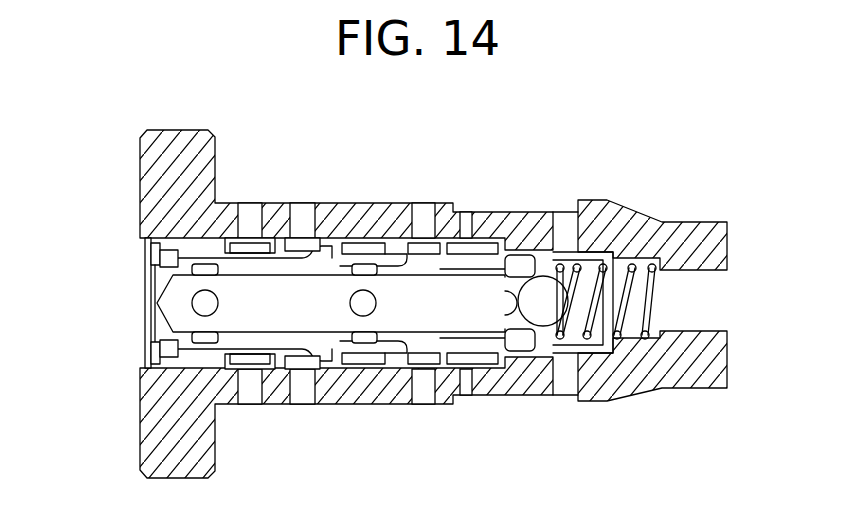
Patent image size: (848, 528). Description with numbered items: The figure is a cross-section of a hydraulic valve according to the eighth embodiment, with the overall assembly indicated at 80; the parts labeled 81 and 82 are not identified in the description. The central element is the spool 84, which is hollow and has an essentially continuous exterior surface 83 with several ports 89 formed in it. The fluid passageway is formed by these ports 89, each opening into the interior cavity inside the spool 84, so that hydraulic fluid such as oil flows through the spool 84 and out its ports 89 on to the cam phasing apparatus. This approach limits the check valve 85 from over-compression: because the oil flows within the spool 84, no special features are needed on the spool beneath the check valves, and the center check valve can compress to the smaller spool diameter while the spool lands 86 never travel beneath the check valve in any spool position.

The valve assembly 80 is at (83, 184).
The spool 81 is at (446, 280).
The valve housing with mounting flange 82 is at (167, 129).
The exterior surface 83 is at (185, 246).
The spool 84 is at (183, 364).
The check valve 85 is at (263, 242).
The spool lands 86 is at (308, 259).
The ports 89 is at (358, 332).